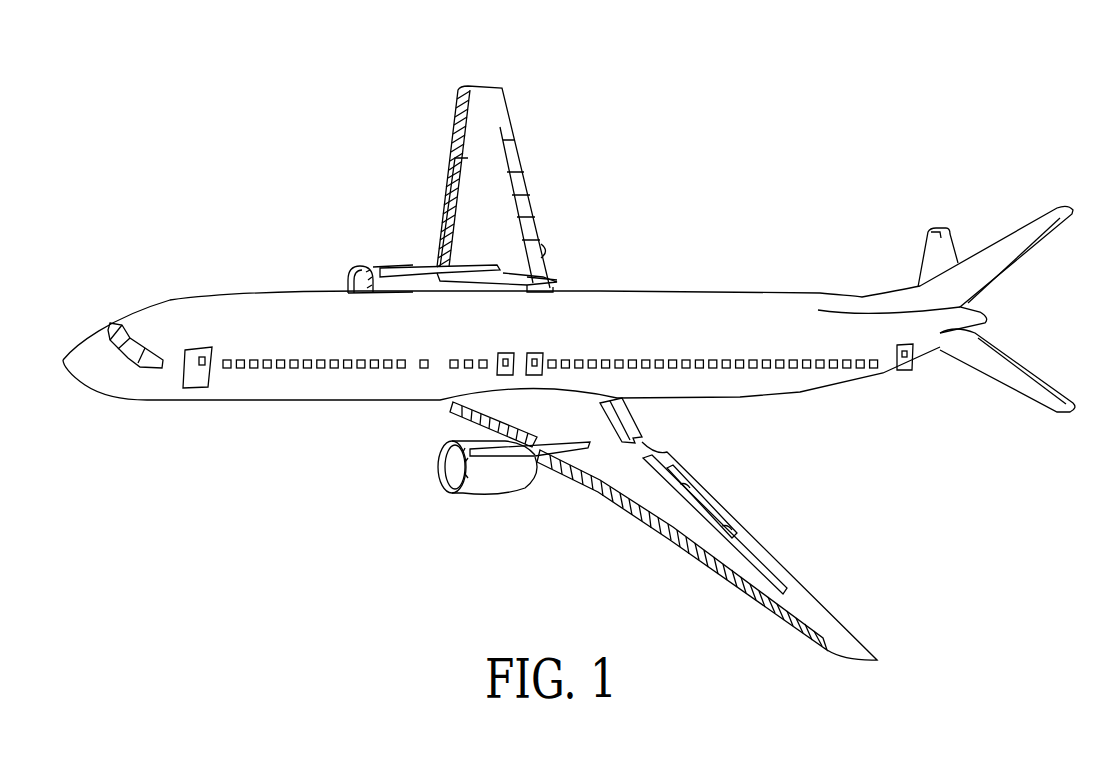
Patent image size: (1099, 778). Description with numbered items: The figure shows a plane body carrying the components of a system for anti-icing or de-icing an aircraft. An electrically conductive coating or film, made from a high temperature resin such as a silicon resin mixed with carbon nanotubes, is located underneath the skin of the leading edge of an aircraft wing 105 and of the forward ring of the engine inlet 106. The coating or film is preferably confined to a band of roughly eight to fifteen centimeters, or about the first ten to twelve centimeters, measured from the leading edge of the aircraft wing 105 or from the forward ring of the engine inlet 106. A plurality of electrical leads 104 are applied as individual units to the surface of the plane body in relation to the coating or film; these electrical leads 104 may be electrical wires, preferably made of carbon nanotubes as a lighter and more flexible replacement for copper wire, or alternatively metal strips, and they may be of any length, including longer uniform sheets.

The electrical leads 104 is at (633, 515).
The aircraft wing 105 is at (453, 155).
The engine inlet 106 is at (447, 465).